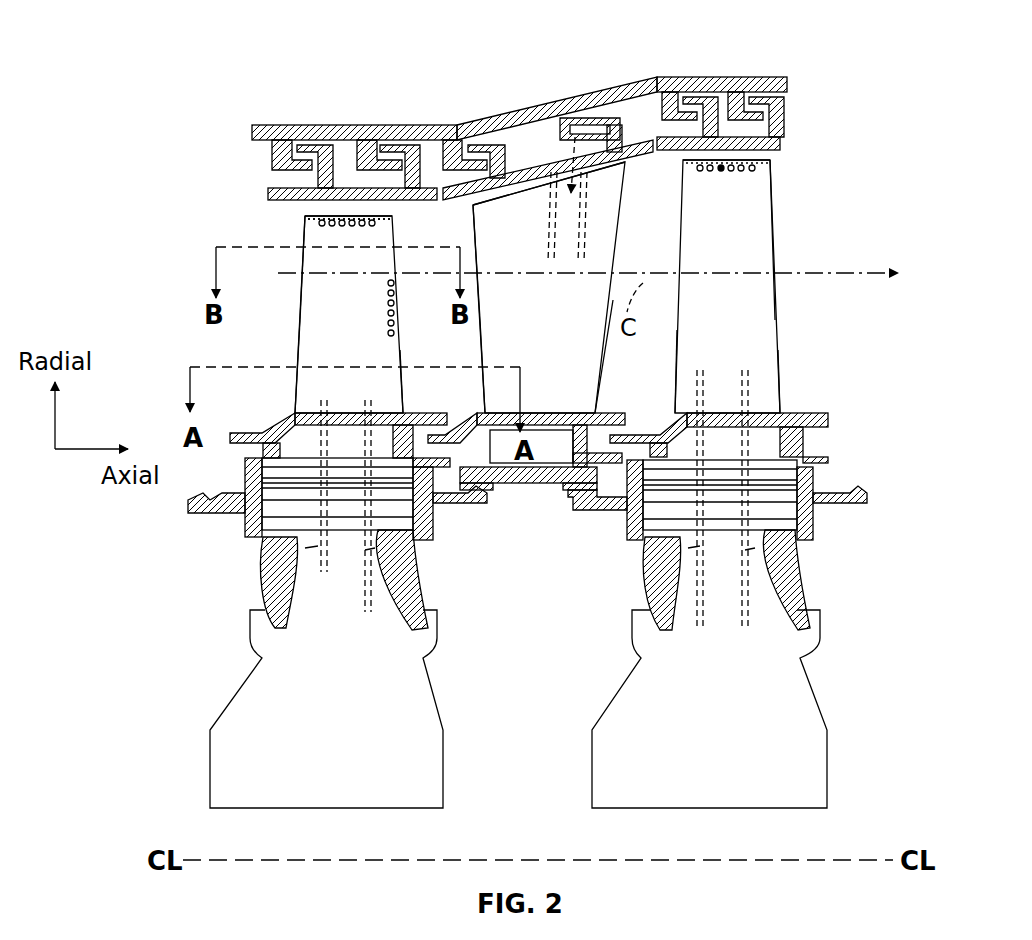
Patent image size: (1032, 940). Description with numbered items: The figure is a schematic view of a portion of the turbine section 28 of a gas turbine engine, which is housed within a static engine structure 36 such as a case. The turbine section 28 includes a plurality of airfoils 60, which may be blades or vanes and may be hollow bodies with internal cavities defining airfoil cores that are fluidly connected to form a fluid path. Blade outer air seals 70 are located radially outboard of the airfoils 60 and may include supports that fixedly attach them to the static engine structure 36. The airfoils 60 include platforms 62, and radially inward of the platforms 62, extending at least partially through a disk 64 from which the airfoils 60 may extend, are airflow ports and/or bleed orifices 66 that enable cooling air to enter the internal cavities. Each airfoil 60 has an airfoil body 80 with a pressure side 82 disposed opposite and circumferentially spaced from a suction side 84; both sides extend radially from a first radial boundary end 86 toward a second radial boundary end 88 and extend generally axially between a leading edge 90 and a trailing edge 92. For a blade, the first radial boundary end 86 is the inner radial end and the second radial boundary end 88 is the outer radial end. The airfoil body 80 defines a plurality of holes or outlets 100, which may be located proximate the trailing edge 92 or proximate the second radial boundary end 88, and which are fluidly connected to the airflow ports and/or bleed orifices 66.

The turbine section 28 is at (225, 60).
The static engine structure 36 is at (302, 127).
The blade outer air seals 70 is at (260, 182).
The airfoils 60 is at (293, 235).
The platforms 62 is at (270, 412).
The disk 64 is at (352, 726).
The airflow ports and/or bleed orifices 66 is at (548, 244).
The airfoil body 80 is at (363, 325).
The pressure side 82 is at (442, 240).
The suction side 84 is at (475, 207).
The first radial boundary end 86 is at (383, 405).
The second radial boundary end 88 is at (518, 132).
The leading edge 90 is at (298, 320).
The trailing edge 92 is at (403, 362).
The holes or outlets 100 is at (428, 300).